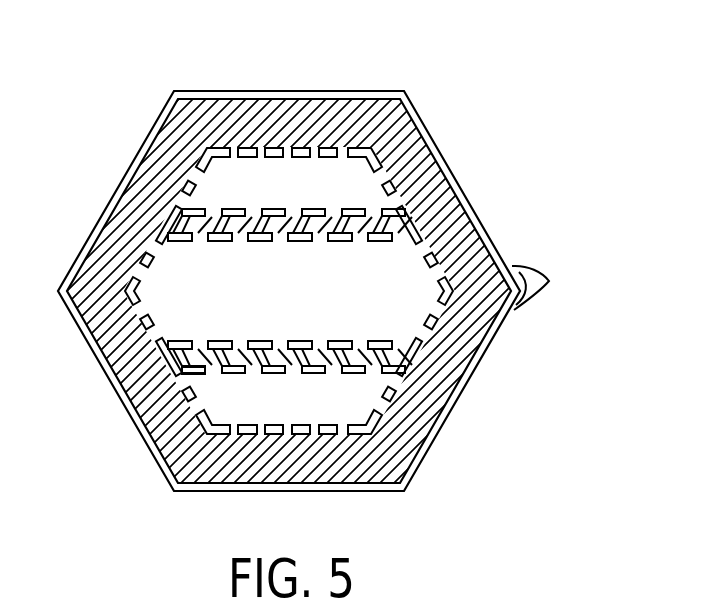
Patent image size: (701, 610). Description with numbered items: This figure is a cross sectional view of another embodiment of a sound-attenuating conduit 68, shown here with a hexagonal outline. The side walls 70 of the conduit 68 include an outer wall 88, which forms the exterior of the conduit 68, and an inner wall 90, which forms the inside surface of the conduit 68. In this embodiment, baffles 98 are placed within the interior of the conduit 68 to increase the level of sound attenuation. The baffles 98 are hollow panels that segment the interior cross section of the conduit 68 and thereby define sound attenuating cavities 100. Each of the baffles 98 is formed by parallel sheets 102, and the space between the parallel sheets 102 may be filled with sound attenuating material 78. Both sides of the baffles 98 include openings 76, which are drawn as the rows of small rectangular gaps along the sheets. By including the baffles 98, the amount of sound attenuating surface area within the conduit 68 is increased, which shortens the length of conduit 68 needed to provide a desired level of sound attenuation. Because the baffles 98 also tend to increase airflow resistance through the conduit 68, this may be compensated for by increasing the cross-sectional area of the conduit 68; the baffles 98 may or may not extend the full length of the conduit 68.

The sound-attenuating conduit 68 is at (119, 69).
The outer wall 88 is at (377, 91).
The inner wall 90 is at (272, 147).
The side walls 70 is at (549, 281).
The baffles 98 is at (204, 243).
The openings 76 is at (283, 342).
The parallel sheets 102 is at (351, 207).
The sound attenuating cavities 100 is at (336, 345).
The sound attenuating material 78 is at (366, 364).